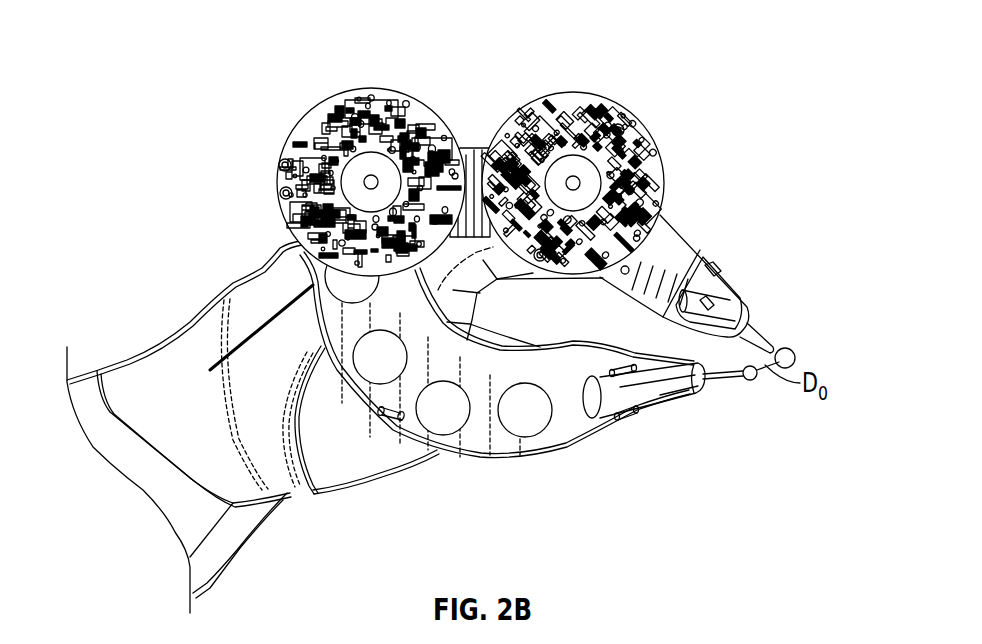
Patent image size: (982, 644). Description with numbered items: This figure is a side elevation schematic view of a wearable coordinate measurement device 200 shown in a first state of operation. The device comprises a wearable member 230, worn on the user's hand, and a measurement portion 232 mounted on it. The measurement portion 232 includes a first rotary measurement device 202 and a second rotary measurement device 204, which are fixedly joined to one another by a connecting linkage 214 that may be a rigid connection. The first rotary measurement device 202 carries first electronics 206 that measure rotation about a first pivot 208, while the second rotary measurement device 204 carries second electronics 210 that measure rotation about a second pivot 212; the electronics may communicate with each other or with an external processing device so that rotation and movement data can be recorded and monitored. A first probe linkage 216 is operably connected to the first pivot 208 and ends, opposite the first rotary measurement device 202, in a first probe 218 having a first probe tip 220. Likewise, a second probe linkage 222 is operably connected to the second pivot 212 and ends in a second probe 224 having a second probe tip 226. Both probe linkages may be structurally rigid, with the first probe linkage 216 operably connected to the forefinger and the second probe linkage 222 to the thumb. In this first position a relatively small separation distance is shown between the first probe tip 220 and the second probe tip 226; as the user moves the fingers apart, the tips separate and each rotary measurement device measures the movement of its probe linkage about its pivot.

The wearable coordinate measurement device 200 is at (152, 80).
The first rotary measurement device 202 is at (584, 168).
The second rotary measurement device 204 is at (333, 161).
The first electronics 206 is at (623, 123).
The first pivot 208 is at (374, 178).
The second electronics 210 is at (293, 187).
The second pivot 212 is at (580, 181).
The connecting linkage 214 is at (463, 150).
The first probe linkage 216 is at (687, 243).
The first probe 218 is at (757, 333).
The first probe tip 220 is at (794, 352).
The second probe linkage 222 is at (480, 443).
The second probe 224 is at (688, 405).
The second probe tip 226 is at (753, 380).
The wearable member 230 is at (233, 277).
The measurement portion 232 is at (733, 269).